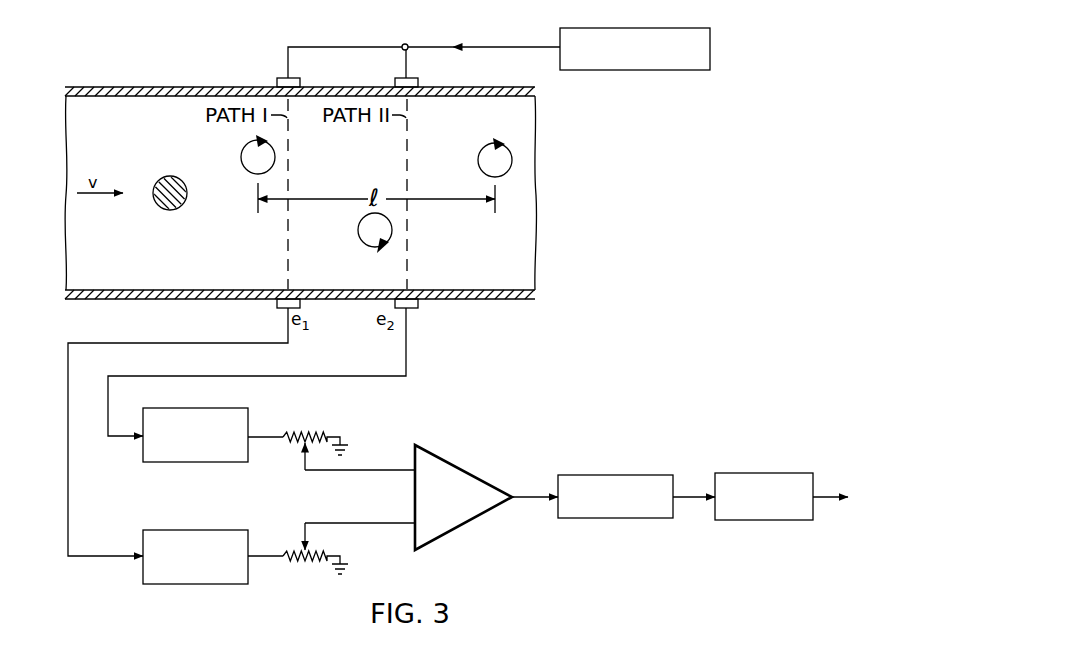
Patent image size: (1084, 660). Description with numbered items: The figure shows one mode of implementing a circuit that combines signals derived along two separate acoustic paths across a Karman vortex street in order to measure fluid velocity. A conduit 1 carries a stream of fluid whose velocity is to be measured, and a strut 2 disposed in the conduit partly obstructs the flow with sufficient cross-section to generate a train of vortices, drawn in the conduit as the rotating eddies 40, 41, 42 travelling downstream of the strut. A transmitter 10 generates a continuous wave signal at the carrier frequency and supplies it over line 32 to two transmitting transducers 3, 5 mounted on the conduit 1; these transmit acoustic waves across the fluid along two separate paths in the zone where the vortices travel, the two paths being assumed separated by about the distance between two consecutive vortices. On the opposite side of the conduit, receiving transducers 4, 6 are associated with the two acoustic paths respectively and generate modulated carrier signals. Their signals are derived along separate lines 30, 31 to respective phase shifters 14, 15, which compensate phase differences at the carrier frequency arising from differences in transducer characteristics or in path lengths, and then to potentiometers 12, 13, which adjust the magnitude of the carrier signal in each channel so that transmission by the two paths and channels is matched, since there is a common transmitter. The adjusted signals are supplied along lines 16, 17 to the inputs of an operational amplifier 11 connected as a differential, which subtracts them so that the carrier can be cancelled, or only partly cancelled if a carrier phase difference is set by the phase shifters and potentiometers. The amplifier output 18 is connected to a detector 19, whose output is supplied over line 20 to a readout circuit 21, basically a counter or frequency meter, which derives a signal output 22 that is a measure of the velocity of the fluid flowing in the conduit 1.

The conduit 1 is at (480, 87).
The strut 2 is at (172, 176).
The transmitter transducer 3 is at (300, 80).
The receiver transducer 4 is at (276, 306).
The transmitter transducer 5 is at (418, 80).
The receiver transducer 6 is at (418, 306).
The transmitter 10 is at (665, 28).
The operational amplifier 11 is at (439, 456).
The potentiometer 12 is at (306, 432).
The potentiometer 13 is at (305, 562).
The phase shifter 14 is at (210, 408).
The phase shifter 15 is at (210, 530).
The line 16 is at (307, 474).
The line 17 is at (307, 522).
The output 18 is at (521, 496).
The detector 19 is at (603, 474).
The line 20 is at (685, 496).
The readout circuit 21 is at (752, 473).
The output lead 22 is at (821, 496).
The line 30 is at (68, 428).
The line 31 is at (108, 424).
The line 32 is at (470, 47).
The eddy 40 is at (241, 158).
The eddy 41 is at (373, 247).
The eddy 42 is at (478, 163).